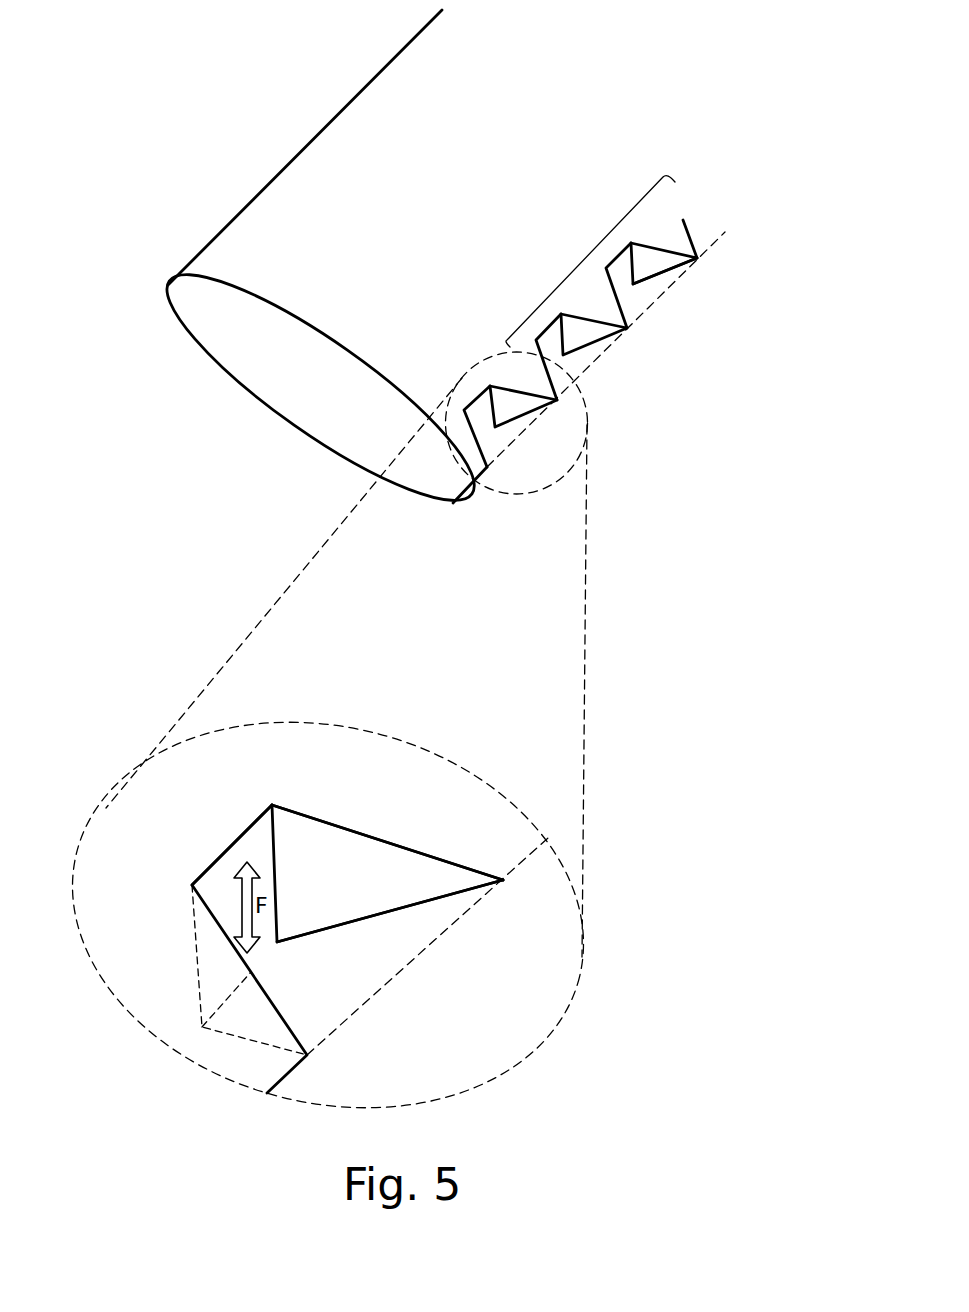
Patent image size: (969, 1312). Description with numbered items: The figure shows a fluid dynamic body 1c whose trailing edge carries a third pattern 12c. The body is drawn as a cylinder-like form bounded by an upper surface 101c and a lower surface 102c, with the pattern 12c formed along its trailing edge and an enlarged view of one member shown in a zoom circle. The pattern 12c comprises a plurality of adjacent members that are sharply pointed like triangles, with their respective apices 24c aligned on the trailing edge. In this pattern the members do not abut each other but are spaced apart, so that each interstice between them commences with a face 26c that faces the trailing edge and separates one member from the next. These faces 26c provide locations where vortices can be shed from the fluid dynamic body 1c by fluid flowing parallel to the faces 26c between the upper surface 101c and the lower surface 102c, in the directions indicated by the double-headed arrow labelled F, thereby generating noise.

The upper surface 101c is at (388, 147).
The fluid dynamic body 1c is at (255, 260).
The lower surface 102c is at (262, 365).
The third pattern 12c is at (553, 290).
The face 26c is at (227, 880).
The apices 24c is at (507, 882).